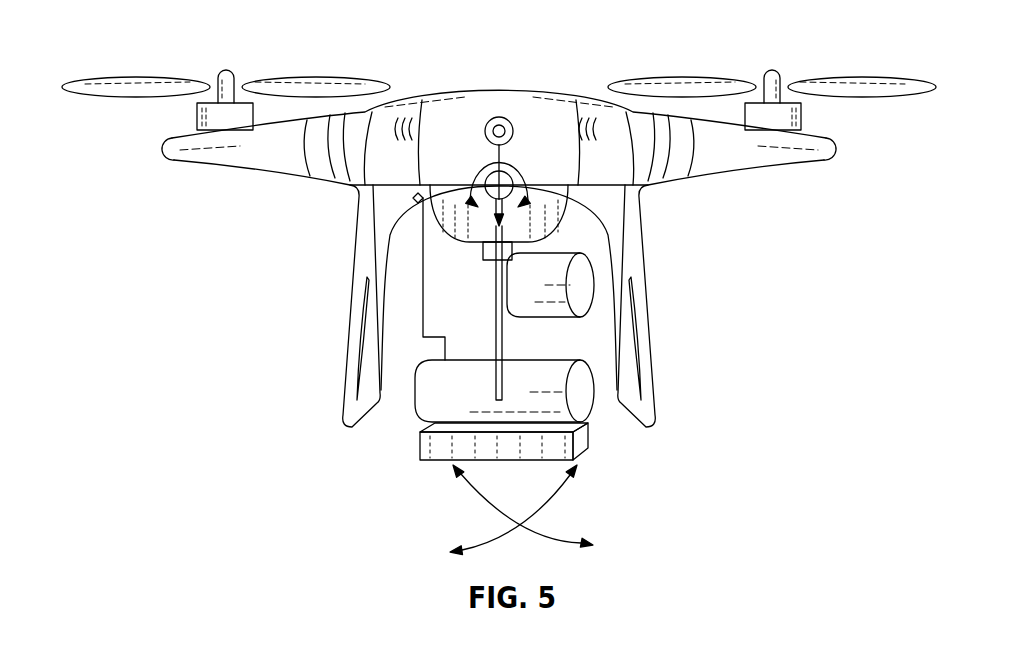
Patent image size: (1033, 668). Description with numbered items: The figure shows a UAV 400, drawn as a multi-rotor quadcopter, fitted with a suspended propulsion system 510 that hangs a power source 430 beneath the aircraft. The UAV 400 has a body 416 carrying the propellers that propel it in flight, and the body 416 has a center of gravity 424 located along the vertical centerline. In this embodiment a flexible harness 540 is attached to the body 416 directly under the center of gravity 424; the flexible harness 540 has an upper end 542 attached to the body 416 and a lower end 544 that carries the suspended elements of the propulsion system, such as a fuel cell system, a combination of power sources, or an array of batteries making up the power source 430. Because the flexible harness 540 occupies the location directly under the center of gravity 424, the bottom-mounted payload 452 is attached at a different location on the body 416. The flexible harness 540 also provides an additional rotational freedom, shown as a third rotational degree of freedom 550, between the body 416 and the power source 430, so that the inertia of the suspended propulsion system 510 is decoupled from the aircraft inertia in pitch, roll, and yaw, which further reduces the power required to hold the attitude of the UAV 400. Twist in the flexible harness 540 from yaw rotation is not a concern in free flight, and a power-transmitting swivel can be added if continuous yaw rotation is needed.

The UAV 400 is at (125, 28).
The body 416 is at (563, 95).
The center of gravity 424 is at (499, 116).
The power source 430 is at (582, 438).
The bottom-mounted payload 452 is at (582, 287).
The suspended propulsion system 510 is at (614, 485).
The flexible harness 540 is at (494, 297).
The upper end 542 is at (484, 250).
The lower end 544 is at (440, 367).
The third rotational degree of freedom 550 is at (414, 200).